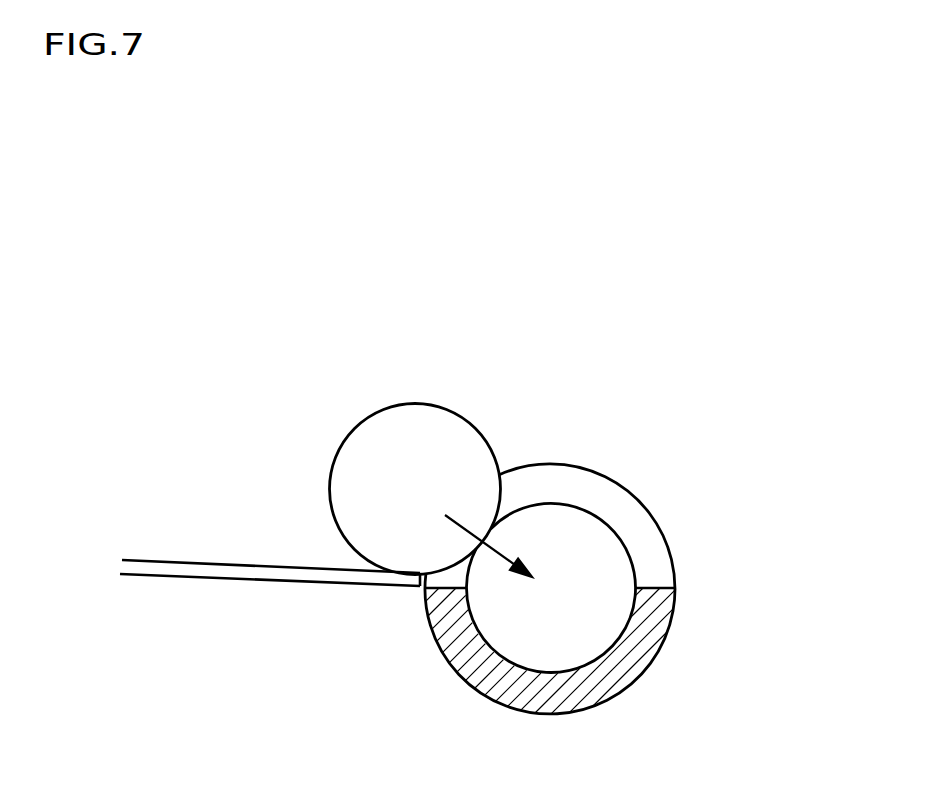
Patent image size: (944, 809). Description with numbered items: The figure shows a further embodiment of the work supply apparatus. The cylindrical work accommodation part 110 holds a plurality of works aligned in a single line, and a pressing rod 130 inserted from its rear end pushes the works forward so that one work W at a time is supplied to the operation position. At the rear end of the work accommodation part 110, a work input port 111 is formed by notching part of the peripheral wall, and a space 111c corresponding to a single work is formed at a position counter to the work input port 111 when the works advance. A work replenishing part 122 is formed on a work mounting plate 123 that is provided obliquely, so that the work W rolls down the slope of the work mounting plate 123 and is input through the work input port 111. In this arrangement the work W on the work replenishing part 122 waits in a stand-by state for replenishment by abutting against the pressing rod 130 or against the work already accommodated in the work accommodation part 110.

The work accommodation part 110 is at (638, 477).
The work input port 111 is at (655, 548).
The space 111c is at (605, 587).
The work replenishing part 122 is at (189, 532).
The work mounting plate 123 is at (253, 582).
The pressing rod 130 is at (580, 638).
The work W is at (418, 428).